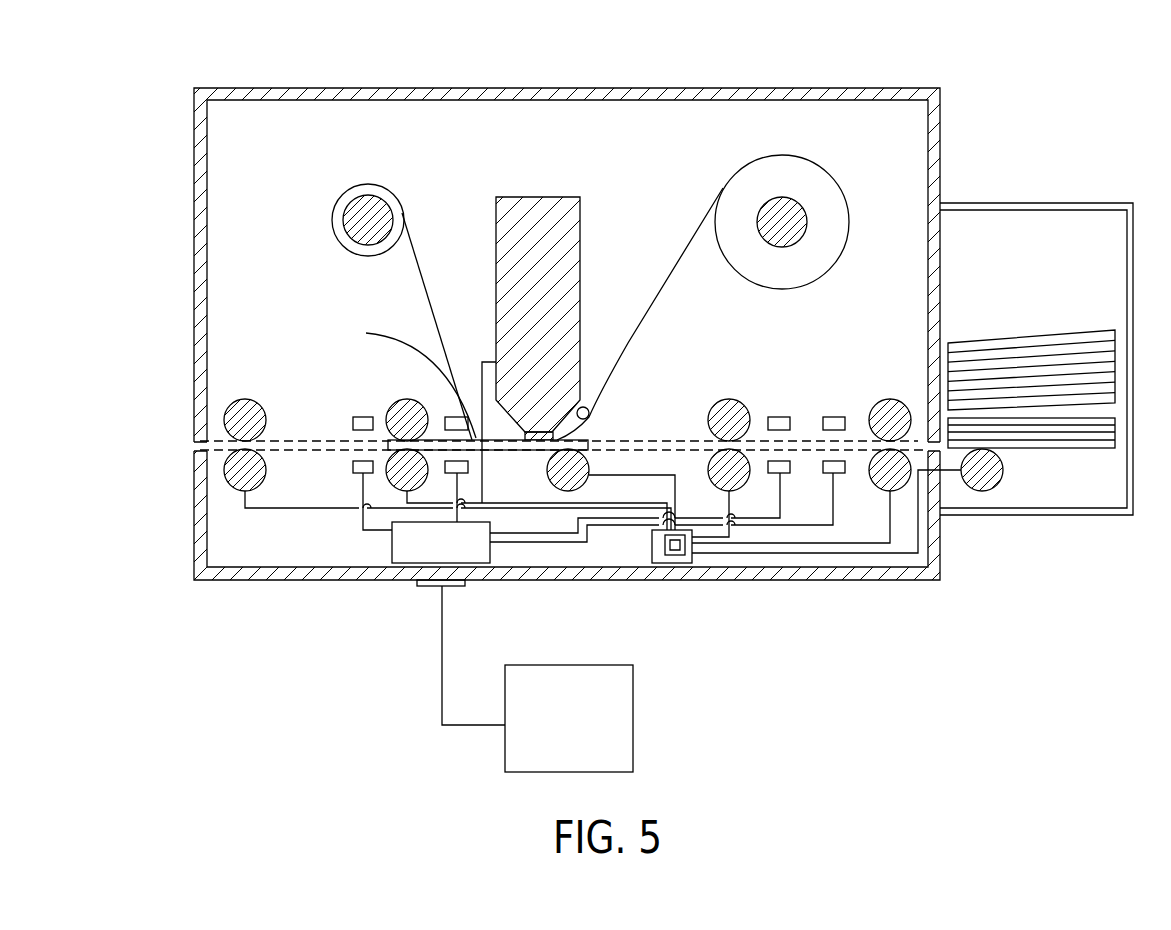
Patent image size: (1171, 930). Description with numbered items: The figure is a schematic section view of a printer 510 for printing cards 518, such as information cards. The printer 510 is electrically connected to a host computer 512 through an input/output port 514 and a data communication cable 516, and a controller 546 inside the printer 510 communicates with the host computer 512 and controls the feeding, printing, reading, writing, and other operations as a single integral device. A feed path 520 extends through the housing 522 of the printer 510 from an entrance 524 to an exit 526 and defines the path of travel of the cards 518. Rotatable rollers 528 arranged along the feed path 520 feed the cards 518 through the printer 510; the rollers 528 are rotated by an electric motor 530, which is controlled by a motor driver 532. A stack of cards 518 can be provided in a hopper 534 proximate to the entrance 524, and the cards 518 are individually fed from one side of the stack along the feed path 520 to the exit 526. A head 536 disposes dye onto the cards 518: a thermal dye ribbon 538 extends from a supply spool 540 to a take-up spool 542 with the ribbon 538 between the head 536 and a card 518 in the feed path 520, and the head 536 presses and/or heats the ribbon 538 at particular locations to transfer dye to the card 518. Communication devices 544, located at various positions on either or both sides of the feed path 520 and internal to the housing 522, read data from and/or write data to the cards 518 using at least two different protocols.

The printer 510 is at (752, 86).
The host computer 512 is at (633, 718).
The input/output (I/O) port 514 is at (417, 584).
The data communication cable 516 is at (442, 660).
The card 518 is at (1060, 300).
The feed path 520 is at (640, 420).
The housing 522 is at (430, 88).
The entrance 524 is at (920, 438).
The exit 526 is at (186, 445).
The rollers 528 is at (247, 399).
The electric motor 530 is at (676, 563).
The motor driver 532 is at (656, 563).
The hopper 534 is at (1020, 203).
The head 536 is at (496, 235).
The thermal dye ribbon 538 is at (675, 270).
The supply spool 540 is at (807, 157).
The take-up spool 542 is at (350, 190).
The communication devices 544 is at (455, 417).
The controller 546 is at (392, 545).